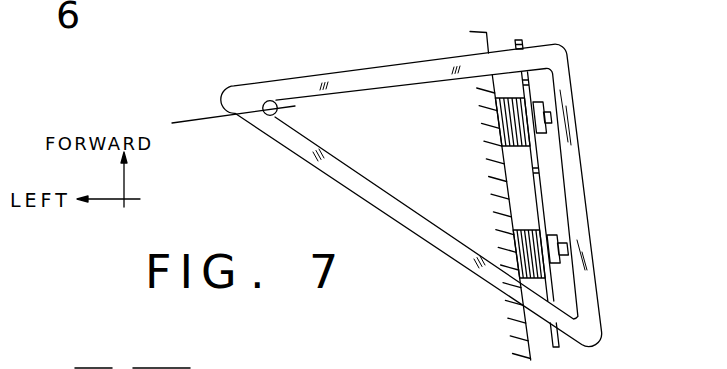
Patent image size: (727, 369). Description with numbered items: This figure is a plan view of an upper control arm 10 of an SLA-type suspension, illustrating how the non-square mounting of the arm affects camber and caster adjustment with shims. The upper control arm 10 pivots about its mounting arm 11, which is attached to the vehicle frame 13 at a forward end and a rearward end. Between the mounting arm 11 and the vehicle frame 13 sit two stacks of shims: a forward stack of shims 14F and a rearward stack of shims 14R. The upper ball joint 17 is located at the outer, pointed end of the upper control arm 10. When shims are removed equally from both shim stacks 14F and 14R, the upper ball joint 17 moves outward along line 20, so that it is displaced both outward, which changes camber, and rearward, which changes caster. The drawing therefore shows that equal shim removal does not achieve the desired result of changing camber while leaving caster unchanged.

The upper control arm 10 is at (553, 53).
The mounting arm 11 is at (520, 42).
The vehicle frame 13 is at (480, 50).
The stack of shims 14F is at (516, 120).
The stack of shims 14R is at (522, 256).
The upper ball joint 17 is at (268, 101).
The line 20 is at (173, 122).